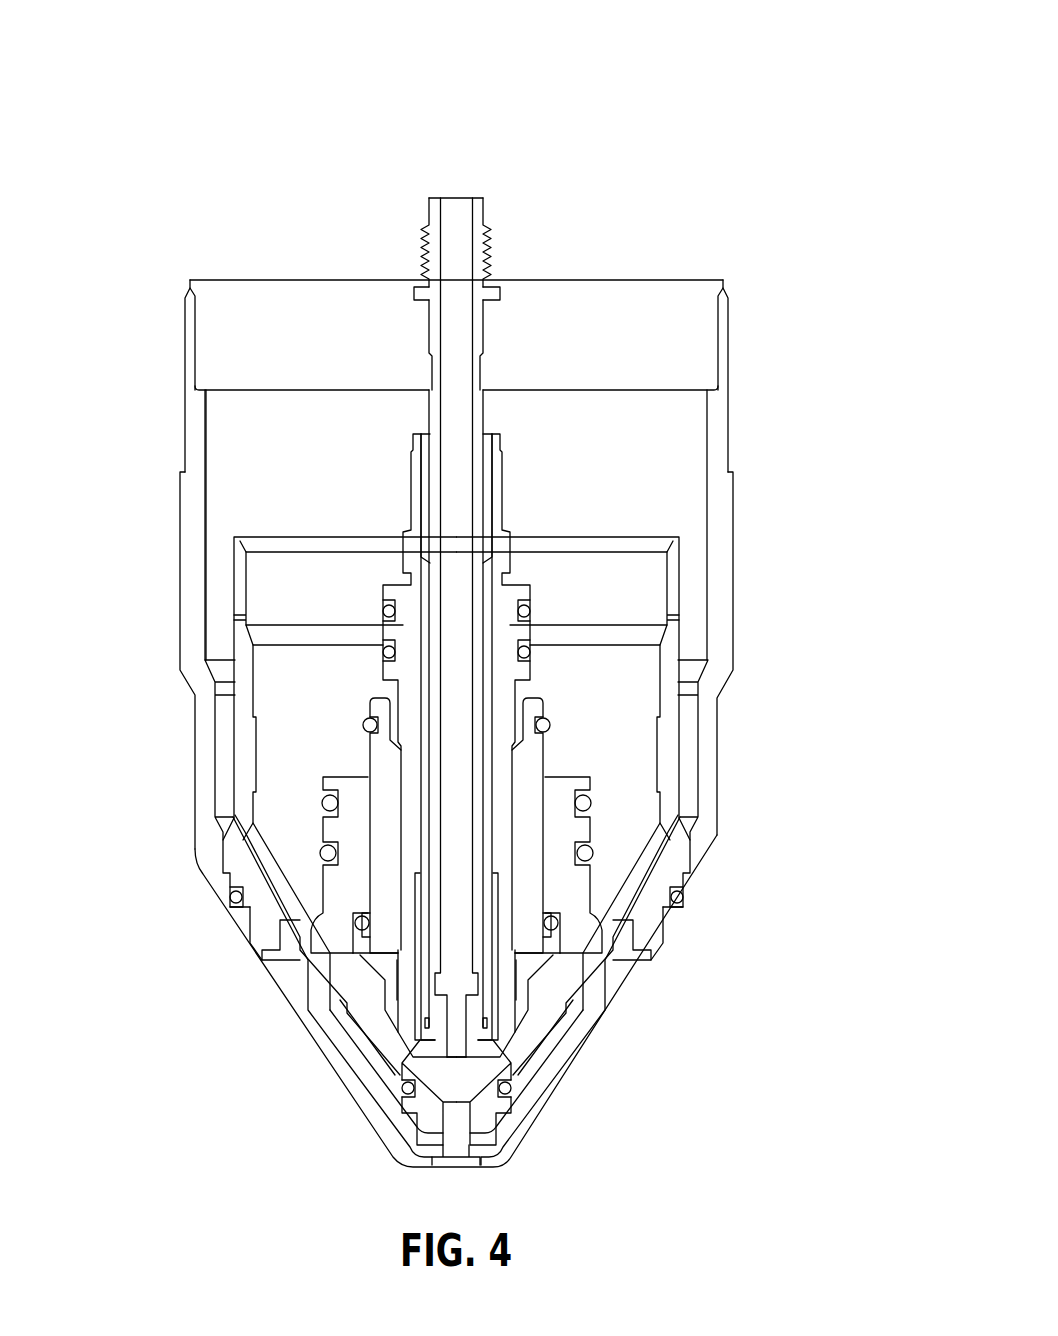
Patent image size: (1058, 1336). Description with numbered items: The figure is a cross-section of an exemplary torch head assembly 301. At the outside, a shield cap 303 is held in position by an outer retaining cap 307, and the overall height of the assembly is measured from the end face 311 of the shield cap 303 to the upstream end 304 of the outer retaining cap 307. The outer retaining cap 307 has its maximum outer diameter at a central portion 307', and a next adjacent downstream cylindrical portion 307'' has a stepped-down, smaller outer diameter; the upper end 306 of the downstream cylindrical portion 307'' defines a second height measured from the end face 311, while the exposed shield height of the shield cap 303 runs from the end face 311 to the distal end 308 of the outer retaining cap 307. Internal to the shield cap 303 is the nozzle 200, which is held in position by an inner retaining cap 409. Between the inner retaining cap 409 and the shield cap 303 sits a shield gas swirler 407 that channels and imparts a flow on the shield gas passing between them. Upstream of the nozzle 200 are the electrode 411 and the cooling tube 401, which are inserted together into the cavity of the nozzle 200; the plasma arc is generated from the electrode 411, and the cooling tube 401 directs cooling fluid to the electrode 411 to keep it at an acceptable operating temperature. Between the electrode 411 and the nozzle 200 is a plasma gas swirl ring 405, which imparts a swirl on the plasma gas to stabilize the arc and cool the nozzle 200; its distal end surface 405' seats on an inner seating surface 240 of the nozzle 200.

The torch head assembly 301 is at (752, 145).
The upstream end 304 is at (190, 280).
The cooling tube 401 is at (483, 209).
The electrode 411 is at (398, 605).
The outer retaining cap 307 is at (530, 615).
The central portion 307' is at (149, 660).
The downstream cylindrical portion 307'' is at (778, 653).
The upper end 306 is at (195, 700).
The inner retaining cap 409 is at (235, 770).
The plasma gas swirl ring 405 is at (595, 877).
The distal end surface 405' is at (564, 1022).
The nozzle 200 is at (590, 880).
The shield gas swirler 407 is at (277, 930).
The distal end 308 is at (690, 908).
The shield cap 303 is at (660, 965).
The inner seating surface 240 is at (550, 955).
The end face 311 is at (493, 1168).